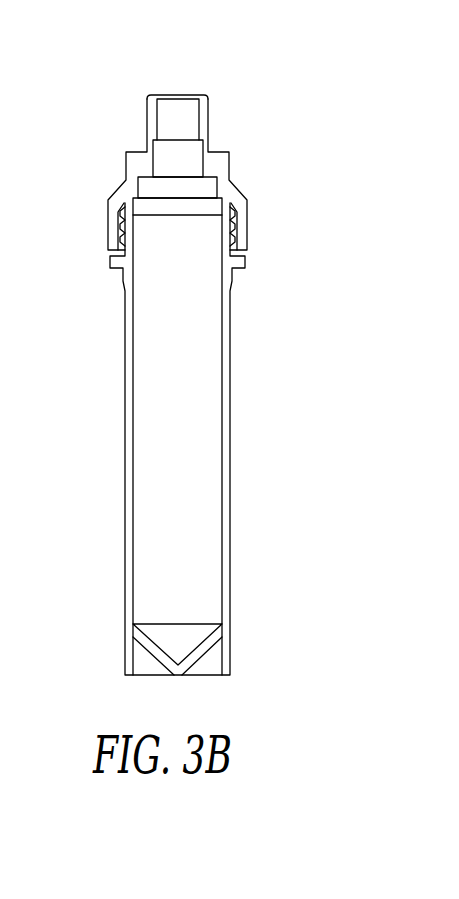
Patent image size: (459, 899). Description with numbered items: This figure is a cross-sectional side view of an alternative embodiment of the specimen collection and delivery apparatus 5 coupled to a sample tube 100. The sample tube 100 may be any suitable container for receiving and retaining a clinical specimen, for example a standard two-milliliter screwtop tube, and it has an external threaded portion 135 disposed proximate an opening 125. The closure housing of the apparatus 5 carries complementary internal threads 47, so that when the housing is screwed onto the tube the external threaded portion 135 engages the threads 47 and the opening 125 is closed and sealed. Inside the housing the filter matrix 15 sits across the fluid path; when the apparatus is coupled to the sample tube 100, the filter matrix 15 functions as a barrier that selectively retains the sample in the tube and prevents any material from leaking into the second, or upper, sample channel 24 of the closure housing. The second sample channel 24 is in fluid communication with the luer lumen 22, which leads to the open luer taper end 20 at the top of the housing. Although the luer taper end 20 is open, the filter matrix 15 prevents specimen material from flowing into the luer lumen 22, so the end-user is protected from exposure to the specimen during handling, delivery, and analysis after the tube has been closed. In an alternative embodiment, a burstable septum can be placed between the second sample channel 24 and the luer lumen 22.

The specimen collection and delivery apparatus 5 is at (247, 139).
The luer taper end 20 is at (181, 95).
The luer lumen 22 is at (173, 120).
The second sample channel 24 is at (175, 160).
The filter matrix 15 is at (205, 187).
The opening 125 is at (178, 216).
The internal threads 47 is at (121, 227).
The external threaded portion 135 is at (245, 225).
The sample tube 100 is at (152, 350).